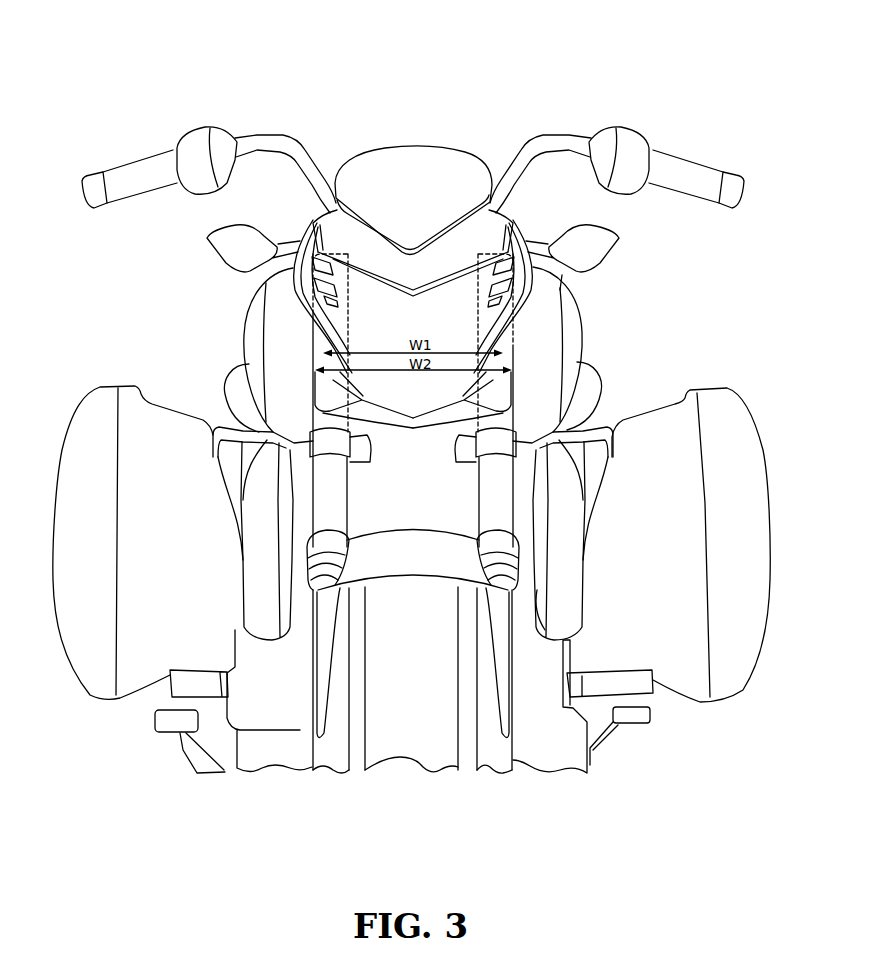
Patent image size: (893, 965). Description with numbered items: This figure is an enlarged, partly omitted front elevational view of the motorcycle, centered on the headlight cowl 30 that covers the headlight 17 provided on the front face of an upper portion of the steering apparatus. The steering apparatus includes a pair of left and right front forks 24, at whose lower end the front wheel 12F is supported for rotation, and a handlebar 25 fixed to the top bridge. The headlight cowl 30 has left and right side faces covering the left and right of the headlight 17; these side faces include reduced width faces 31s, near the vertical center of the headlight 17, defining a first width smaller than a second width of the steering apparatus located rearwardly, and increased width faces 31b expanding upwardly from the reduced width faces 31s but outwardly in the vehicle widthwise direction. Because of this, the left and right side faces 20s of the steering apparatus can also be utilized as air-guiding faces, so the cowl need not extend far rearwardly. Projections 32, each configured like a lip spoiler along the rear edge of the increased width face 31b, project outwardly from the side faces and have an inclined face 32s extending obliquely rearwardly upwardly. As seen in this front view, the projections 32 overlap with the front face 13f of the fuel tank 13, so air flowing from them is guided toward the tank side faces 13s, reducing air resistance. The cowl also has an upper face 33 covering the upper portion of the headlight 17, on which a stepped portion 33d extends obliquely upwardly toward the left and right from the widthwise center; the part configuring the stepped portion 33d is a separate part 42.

The front wheel 12F is at (422, 752).
The fuel tank 13 is at (533, 297).
The front face of the fuel tank 13f is at (540, 318).
The tank side faces 13s is at (573, 318).
The headlight 17 is at (370, 315).
The left and right side faces of the steering apparatus 20s is at (317, 357).
The front forks 24 is at (317, 383).
The handlebar 25 is at (693, 177).
The headlight cowl 30 is at (283, 297).
The increased width faces 31b is at (581, 307).
The reduced width faces 31s is at (517, 349).
The projections 32 is at (537, 302).
The inclined face 32s is at (562, 281).
The upper face 33 is at (393, 257).
The stepped portion 33d is at (358, 220).
The separate part 42 is at (453, 177).